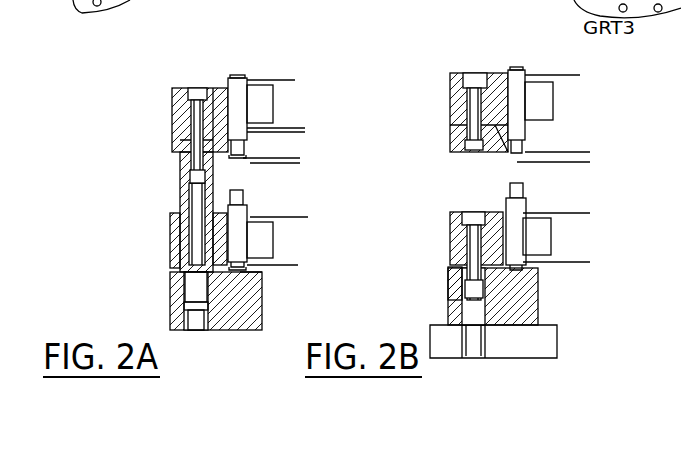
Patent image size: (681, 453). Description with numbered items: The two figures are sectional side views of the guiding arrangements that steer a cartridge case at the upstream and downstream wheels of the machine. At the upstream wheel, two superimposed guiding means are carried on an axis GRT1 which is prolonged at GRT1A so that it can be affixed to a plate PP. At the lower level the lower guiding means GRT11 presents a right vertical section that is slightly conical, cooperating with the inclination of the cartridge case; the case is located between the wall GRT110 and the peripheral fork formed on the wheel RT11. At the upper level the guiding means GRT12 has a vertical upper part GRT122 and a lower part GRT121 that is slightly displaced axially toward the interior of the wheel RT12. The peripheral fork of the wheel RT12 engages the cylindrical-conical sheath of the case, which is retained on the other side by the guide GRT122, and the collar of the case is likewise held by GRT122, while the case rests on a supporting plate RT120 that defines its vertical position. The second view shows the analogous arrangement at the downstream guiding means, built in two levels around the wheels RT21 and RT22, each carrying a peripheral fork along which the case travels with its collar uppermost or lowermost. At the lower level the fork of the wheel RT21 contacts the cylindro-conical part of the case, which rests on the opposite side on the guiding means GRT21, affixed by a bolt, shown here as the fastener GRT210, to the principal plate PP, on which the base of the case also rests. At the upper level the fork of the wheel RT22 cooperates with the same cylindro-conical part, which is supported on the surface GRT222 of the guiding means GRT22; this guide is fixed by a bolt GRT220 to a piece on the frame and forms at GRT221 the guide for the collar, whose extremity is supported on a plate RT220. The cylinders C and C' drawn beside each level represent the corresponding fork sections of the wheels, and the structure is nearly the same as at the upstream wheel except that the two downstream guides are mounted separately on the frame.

In FIG. 2A, the plate PP is at (245, 307).
In FIG. 2B, the plate PP is at (520, 300).
In FIG. 2A, the prolongation of axis GRT1 GRT1A is at (185, 290).
In FIG. 2A, the lower guiding means GRT11 is at (175, 228).
In FIG. 2A, the wall GRT110 is at (196, 250).
In FIG. 2A, the upper guiding means GRT12 is at (173, 110).
In FIG. 2A, the vertical upper part GRT122 is at (221, 100).
In FIG. 2A, the lower part GRT121 is at (196, 140).
In FIG. 2A, the axis GRT1 is at (197, 88).
In FIG. 2A, the upper cylinder C is at (255, 106).
In FIG. 2B, the upper cylinder C is at (534, 101).
In FIG. 2A, the lower cylinder C' is at (259, 227).
In FIG. 2B, the lower cylinder C' is at (536, 226).
In FIG. 2A, the wheel RT12 is at (290, 105).
In FIG. 2A, the supporting plate RT120 is at (295, 160).
In FIG. 2A, the wheel RT11 is at (285, 240).
In FIG. 2B, the guiding means GRT21 is at (455, 250).
In FIG. 2B, the lower fastening bolt GRT210 is at (468, 217).
In FIG. 2B, the guiding means GRT22 is at (456, 98).
In FIG. 2B, the bolt GRT220 is at (471, 82).
In FIG. 2B, the surface GRT222 is at (487, 78).
In FIG. 2B, the guiding means for the collar GRT221 is at (500, 150).
In FIG. 2B, the wheel RT22 is at (575, 97).
In FIG. 2B, the plate RT220 is at (585, 160).
In FIG. 2B, the wheel RT21 is at (570, 234).